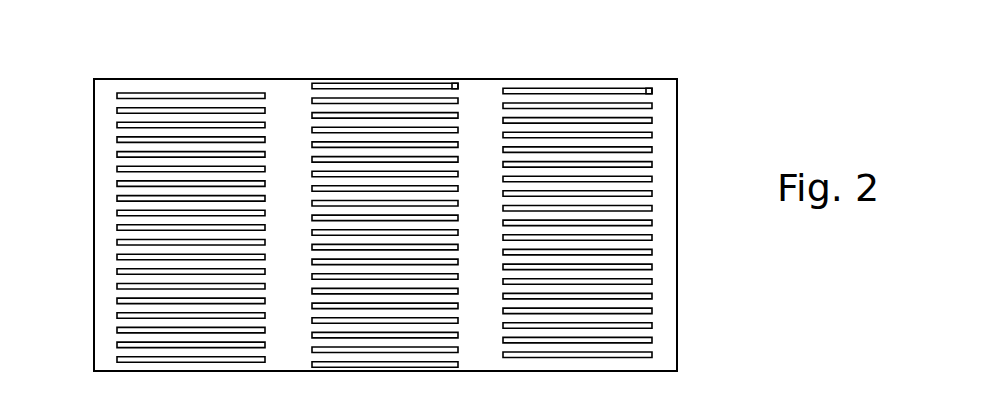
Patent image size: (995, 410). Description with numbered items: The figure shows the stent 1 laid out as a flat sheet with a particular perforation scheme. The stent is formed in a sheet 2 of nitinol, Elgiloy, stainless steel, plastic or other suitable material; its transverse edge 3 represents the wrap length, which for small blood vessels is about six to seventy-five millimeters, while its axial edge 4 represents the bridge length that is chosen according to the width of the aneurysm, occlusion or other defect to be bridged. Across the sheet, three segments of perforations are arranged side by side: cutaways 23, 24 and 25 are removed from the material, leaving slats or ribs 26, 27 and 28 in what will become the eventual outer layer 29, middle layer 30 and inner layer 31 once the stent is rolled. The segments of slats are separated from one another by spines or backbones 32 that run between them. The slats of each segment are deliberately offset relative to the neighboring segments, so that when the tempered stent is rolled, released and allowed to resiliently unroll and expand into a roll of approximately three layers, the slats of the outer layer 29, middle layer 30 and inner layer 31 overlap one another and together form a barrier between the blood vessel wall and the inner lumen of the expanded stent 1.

The stent 1 is at (401, 185).
The sheet 2 is at (667, 146).
The transverse edge 3 is at (208, 79).
The axial edge 4 is at (678, 201).
The cutaway 23 is at (118, 108).
The cutaway 24 is at (415, 85).
The cutaway 25 is at (605, 88).
The slat 26 is at (118, 99).
The slat 27 is at (442, 90).
The slat 28 is at (627, 95).
The outer layer 29 is at (156, 183).
The middle layer 30 is at (393, 183).
The inner layer 31 is at (595, 180).
The spine 32 is at (285, 83).